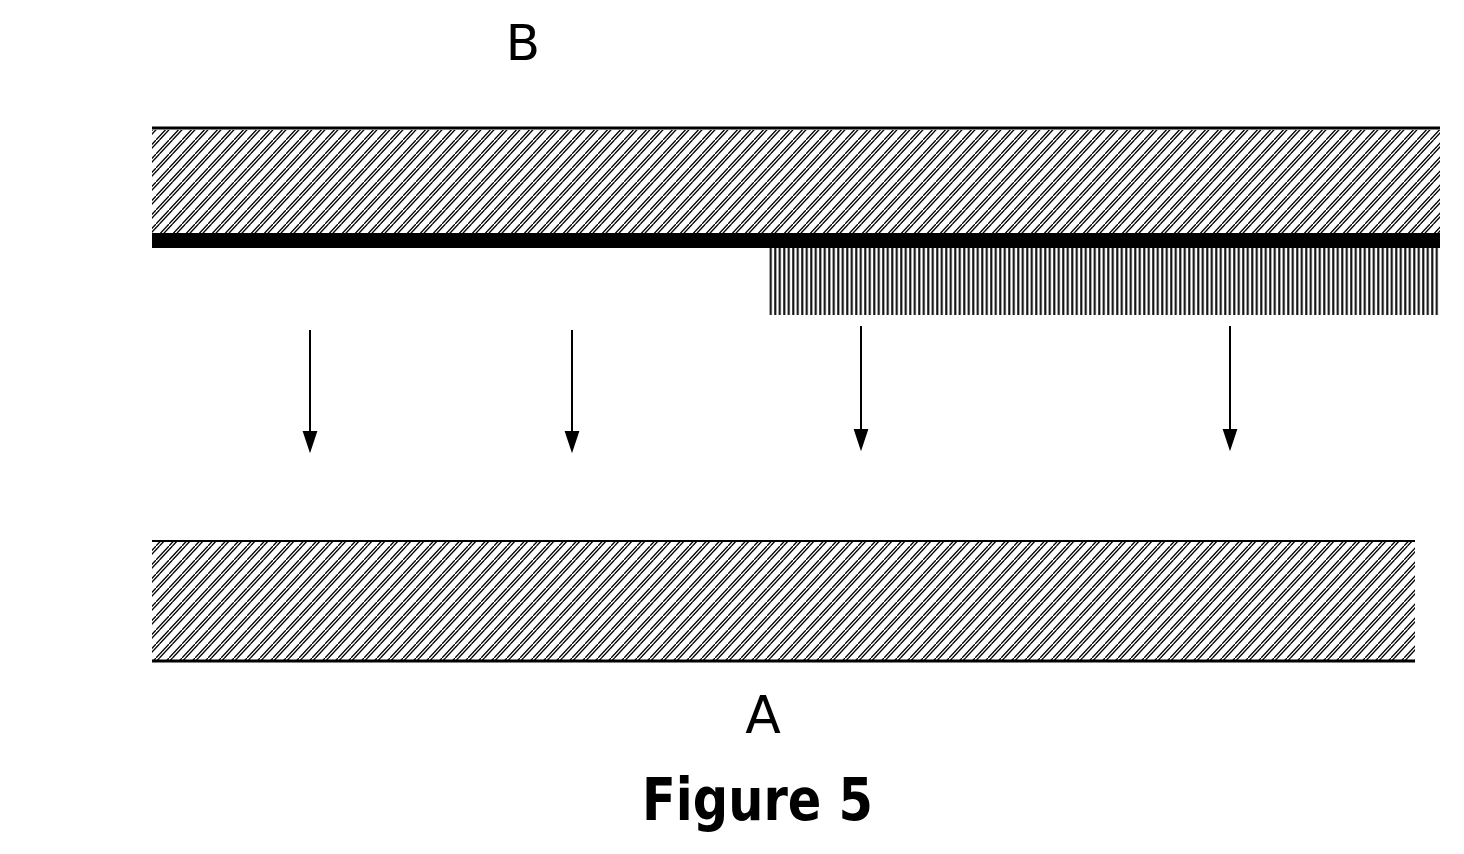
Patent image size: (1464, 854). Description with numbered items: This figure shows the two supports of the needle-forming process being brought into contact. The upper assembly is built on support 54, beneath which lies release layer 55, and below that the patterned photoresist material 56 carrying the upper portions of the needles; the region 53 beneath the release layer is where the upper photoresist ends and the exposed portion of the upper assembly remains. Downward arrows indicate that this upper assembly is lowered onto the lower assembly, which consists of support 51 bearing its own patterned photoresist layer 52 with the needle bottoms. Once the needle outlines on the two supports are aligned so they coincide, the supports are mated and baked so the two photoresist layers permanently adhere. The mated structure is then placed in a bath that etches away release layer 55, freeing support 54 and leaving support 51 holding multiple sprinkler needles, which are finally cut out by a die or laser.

The support 51 is at (507, 597).
The top surface of first substrate 52 is at (1007, 498).
The exposed region of adhesive layer 53 is at (297, 290).
The support 54 is at (665, 182).
The release layer 55 is at (152, 237).
The release liner / coating layer 56 is at (1177, 287).